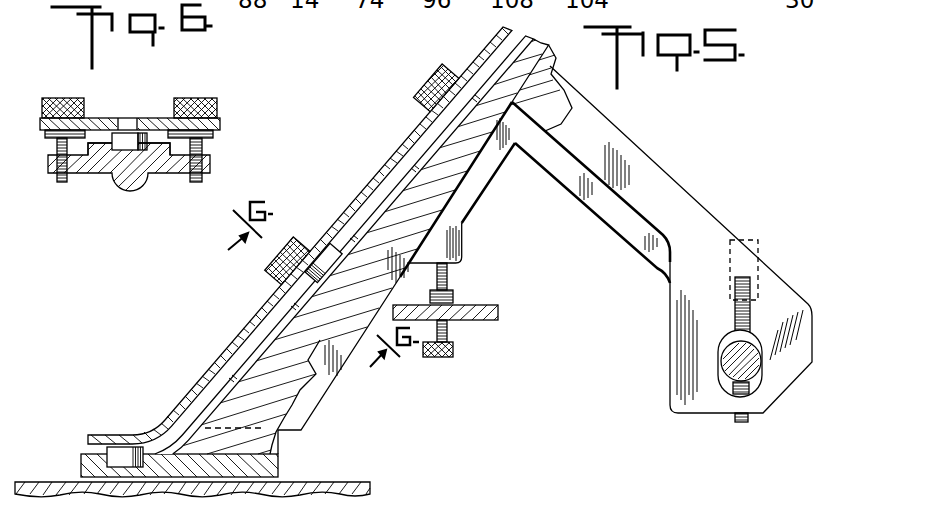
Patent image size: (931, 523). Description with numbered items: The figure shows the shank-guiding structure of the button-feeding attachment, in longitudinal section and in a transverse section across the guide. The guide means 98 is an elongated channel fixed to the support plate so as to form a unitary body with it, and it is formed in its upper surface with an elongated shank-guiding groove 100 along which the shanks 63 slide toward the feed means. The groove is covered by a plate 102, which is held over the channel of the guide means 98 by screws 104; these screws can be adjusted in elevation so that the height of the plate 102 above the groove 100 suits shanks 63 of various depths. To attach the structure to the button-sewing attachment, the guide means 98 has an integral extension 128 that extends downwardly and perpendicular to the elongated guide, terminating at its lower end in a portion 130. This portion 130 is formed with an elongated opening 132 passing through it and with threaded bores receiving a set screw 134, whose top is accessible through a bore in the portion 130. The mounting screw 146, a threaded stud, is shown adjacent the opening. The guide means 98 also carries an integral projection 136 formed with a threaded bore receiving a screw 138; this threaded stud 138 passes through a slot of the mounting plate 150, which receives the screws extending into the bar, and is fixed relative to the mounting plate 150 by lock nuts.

In FIG. 6, the shank 63 is at (140, 130).
In FIG. 5, the shank 63 is at (328, 258).
In FIG. 6, the guide means 98 is at (95, 160).
In FIG. 5, the guide means 98 is at (478, 127).
In FIG. 6, the shank-guiding groove 100 is at (145, 145).
In FIG. 5, the shank-guiding groove 100 is at (418, 163).
In FIG. 6, the plate 102 is at (96, 118).
In FIG. 5, the plate 102 is at (377, 187).
In FIG. 6, the screws 104 is at (58, 98).
In FIG. 5, the screws 104 is at (416, 93).
In FIG. 5, the extension 128 is at (633, 160).
In FIG. 5, the portion 130 is at (685, 362).
In FIG. 5, the elongated opening 132 is at (752, 337).
In FIG. 5, the set screw 134 is at (740, 277).
In FIG. 5, the projection 136 is at (453, 253).
In FIG. 5, the screw 138 is at (447, 285).
In FIG. 5, the mounting screw 146 is at (735, 367).
In FIG. 5, the mounting plate 150 is at (497, 310).